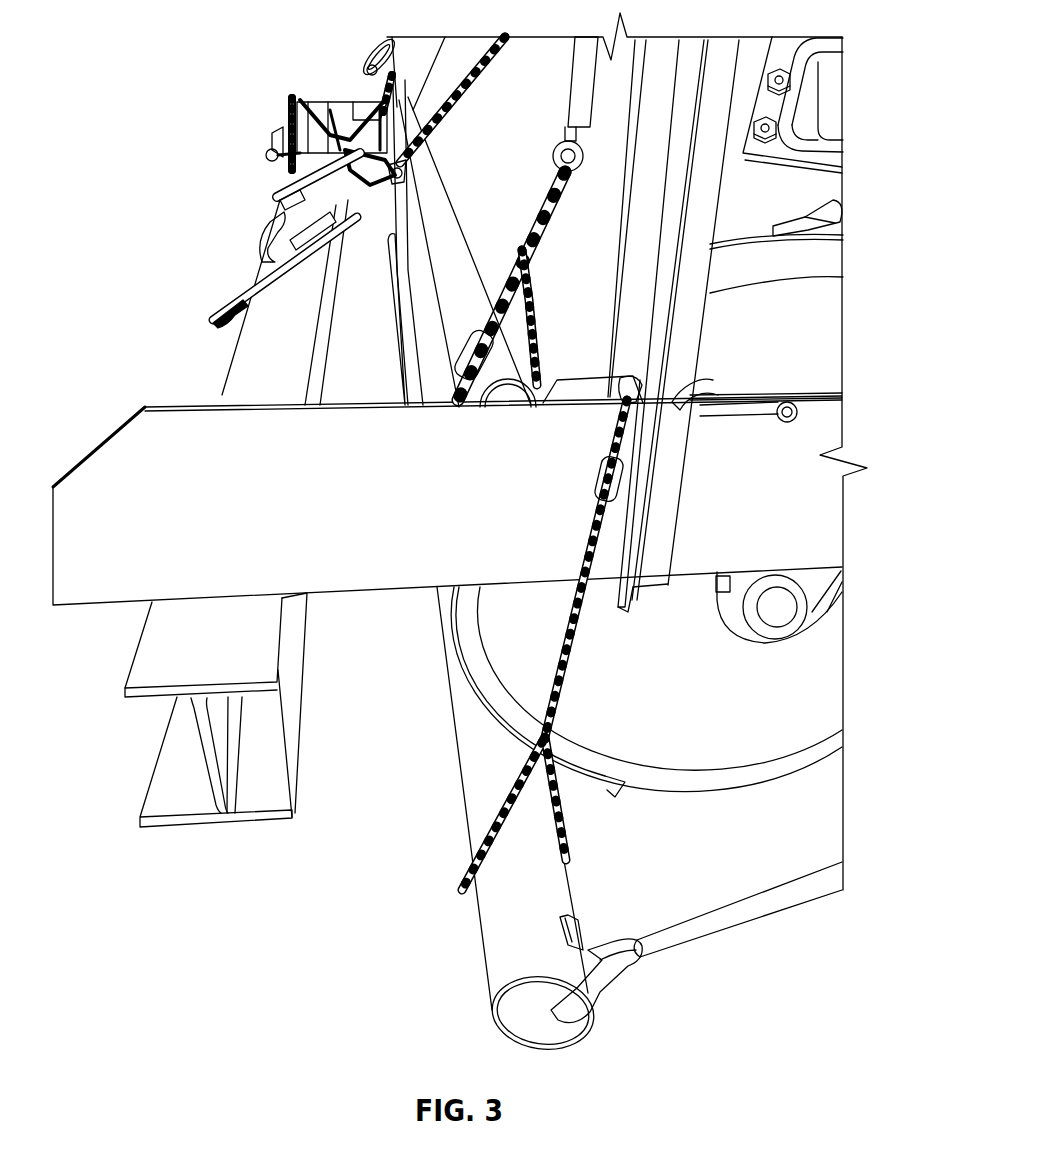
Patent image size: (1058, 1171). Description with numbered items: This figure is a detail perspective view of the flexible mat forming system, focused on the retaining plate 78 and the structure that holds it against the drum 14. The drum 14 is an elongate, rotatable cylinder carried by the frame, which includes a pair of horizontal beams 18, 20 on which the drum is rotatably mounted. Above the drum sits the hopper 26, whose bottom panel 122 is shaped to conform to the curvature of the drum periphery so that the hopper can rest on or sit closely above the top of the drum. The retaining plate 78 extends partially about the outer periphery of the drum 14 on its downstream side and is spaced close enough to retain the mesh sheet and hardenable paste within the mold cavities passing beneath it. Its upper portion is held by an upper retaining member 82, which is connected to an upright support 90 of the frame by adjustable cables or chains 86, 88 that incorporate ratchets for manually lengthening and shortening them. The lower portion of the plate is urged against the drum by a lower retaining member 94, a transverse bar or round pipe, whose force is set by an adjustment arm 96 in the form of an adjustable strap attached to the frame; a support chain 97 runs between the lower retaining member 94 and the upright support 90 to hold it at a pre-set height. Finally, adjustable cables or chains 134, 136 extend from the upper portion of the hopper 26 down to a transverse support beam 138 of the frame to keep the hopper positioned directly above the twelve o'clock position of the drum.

The drum 14 is at (713, 755).
The horizontal beam 18 is at (393, 588).
The horizontal beam 20 is at (297, 103).
The hopper 26 is at (797, 207).
The retaining plate 78 is at (430, 347).
The upper retaining member 82 is at (443, 230).
The adjustable cable or chain 86 is at (578, 103).
The adjustable cable or chain 88 is at (373, 67).
The upright support 90 is at (637, 267).
The lower retaining member 94 is at (495, 937).
The left adjustment arm 96 is at (720, 918).
The support chain 97 is at (590, 640).
The bottom panel 122 is at (580, 240).
The adjustable cable or chain 134 is at (423, 147).
The adjustable cable or chain 136 is at (297, 180).
The transverse support beam 138 is at (247, 360).